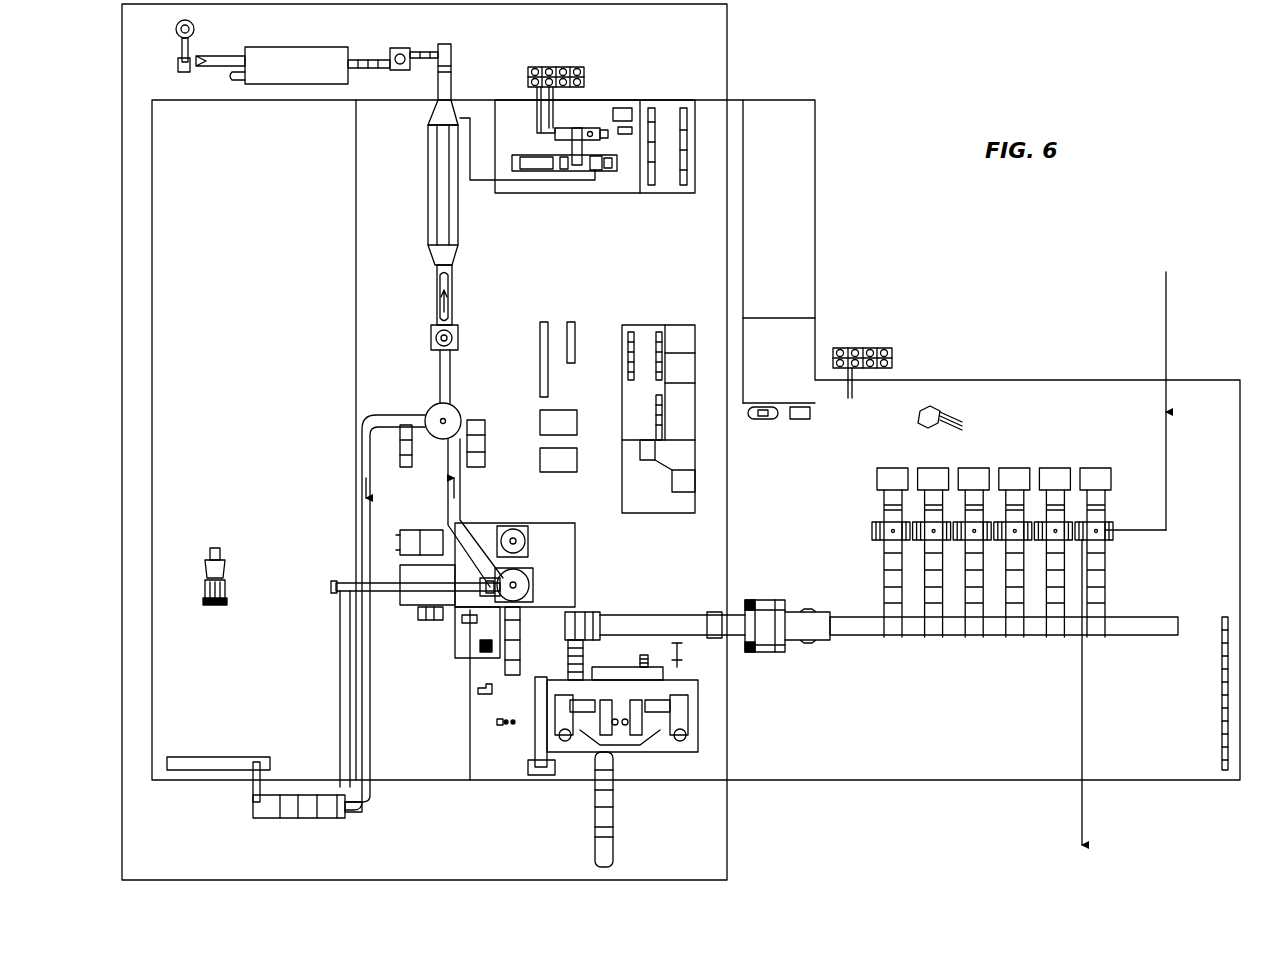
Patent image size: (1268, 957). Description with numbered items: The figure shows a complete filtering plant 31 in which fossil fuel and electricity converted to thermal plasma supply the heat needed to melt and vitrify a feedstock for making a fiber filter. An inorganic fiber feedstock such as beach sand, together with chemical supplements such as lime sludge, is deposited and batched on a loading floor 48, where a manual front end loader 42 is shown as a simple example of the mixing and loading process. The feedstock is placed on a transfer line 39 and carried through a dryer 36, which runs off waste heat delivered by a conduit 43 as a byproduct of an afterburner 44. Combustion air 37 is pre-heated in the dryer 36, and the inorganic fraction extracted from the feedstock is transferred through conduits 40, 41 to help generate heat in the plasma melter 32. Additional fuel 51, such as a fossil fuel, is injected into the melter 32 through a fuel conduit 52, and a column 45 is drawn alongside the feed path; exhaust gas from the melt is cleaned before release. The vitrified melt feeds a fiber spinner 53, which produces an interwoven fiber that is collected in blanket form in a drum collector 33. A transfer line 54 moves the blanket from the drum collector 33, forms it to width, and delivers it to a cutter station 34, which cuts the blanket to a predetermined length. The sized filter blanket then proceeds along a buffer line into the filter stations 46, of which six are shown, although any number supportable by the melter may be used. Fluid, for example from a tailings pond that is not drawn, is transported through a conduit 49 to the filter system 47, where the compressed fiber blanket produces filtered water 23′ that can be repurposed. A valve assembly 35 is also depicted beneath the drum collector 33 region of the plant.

The apparatus enclosure 31 is at (727, 50).
The loading floor 48 is at (210, 312).
The conduit 49 is at (1166, 335).
The column 45 is at (460, 218).
The fiber spinner 53 is at (545, 618).
The fuel conduit 52 is at (470, 745).
The afterburner 44 is at (459, 412).
The conduit 43 is at (372, 525).
The manual front end loader 42 is at (225, 563).
The conduit 40 is at (340, 650).
The conduit 41 is at (385, 592).
The plasma melter 32 is at (530, 565).
The drum collector 33 is at (580, 612).
The transfer line 54 is at (690, 612).
The cutter station 34 is at (775, 655).
The filter stations 46 is at (1111, 460).
The filter system 47 is at (1112, 535).
The filtered water 23′ is at (1081, 711).
The valve assembly 35 is at (630, 755).
The transfer line 39 is at (207, 757).
The dryer 36 is at (305, 820).
The combustion air 37 is at (272, 842).
The additional fuel 51 is at (470, 810).